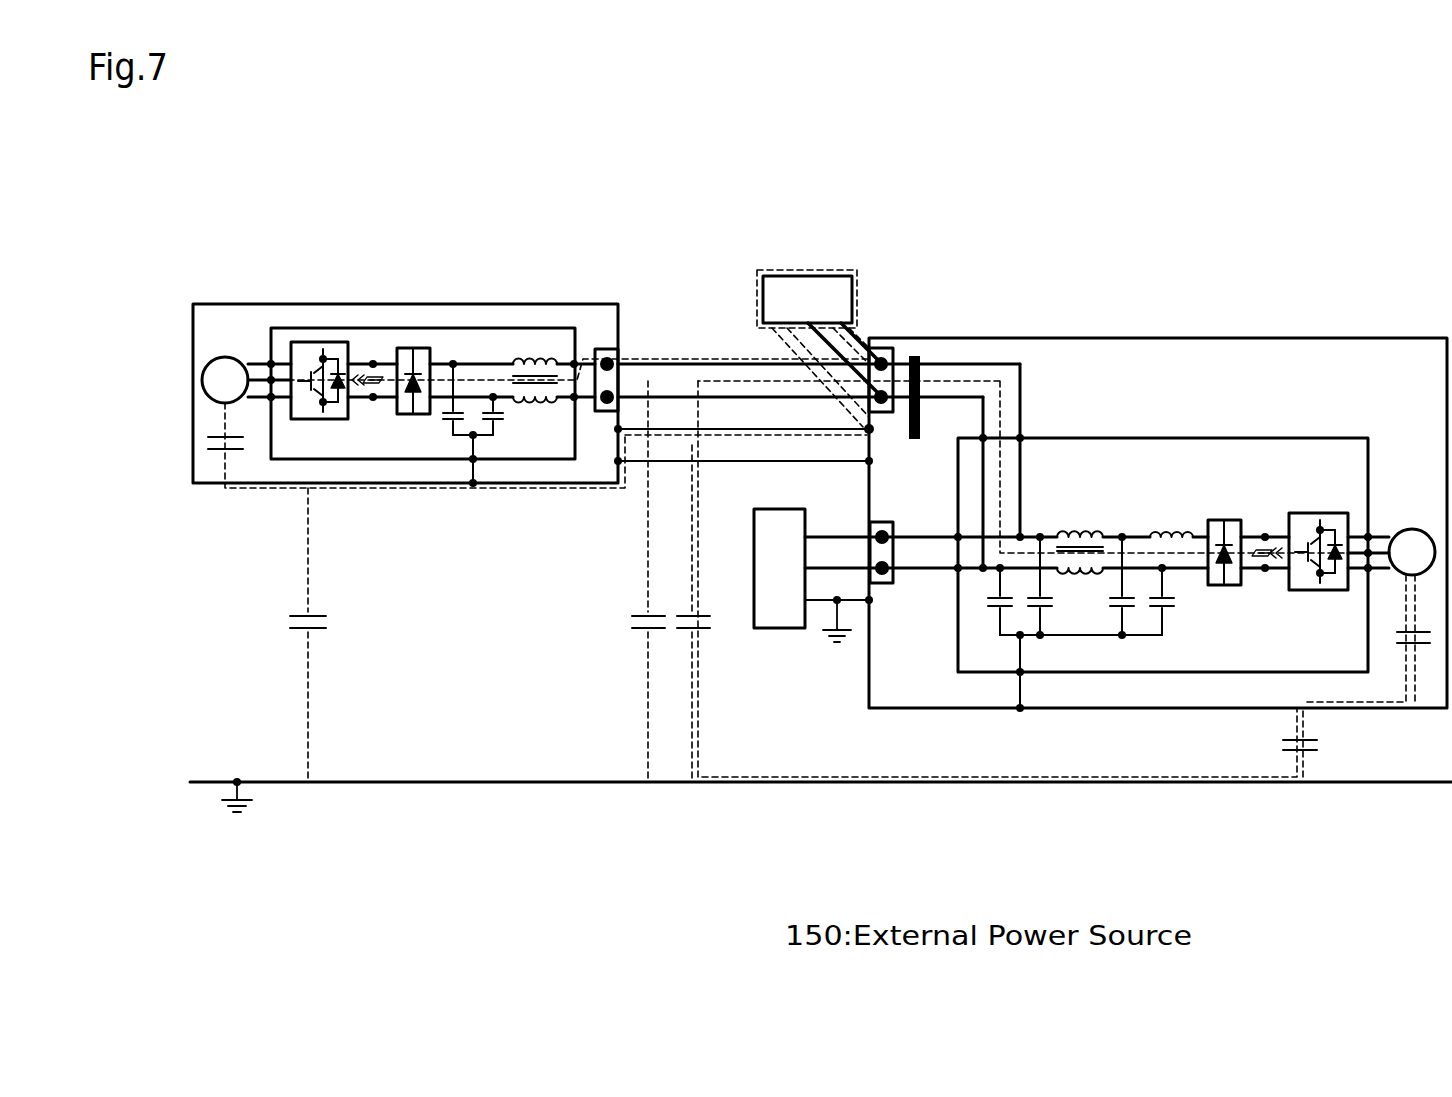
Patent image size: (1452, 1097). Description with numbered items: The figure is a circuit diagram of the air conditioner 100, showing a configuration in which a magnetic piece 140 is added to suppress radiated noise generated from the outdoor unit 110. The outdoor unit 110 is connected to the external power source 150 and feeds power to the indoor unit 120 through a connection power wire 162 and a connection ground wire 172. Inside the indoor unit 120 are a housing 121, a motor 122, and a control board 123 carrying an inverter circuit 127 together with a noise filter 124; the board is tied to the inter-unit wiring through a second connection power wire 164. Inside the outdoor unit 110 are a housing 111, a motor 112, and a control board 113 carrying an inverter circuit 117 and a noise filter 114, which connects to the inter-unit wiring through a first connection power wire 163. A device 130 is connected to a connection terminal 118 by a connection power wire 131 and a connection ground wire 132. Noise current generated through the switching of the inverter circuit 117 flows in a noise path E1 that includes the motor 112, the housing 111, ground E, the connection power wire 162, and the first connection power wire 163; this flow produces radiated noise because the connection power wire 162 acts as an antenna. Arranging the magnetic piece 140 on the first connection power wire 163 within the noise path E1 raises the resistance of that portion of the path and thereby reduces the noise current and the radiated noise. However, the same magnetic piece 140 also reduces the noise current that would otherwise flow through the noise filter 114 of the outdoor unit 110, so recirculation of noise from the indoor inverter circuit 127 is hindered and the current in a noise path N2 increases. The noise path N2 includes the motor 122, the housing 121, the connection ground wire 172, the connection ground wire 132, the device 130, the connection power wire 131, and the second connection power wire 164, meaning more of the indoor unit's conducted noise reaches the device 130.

The air conditioner 100 is at (1158, 417).
The outdoor unit 110 is at (1158, 475).
The housing 111 is at (1296, 338).
The motor 112 is at (1412, 529).
The control board 113 is at (1171, 544).
The noise filter 114 is at (1185, 642).
The inverter circuit 117 is at (1313, 513).
The connection terminal 118 is at (880, 348).
The indoor unit 120 is at (409, 363).
The housing 121 is at (505, 304).
The motor 122 is at (217, 356).
The control board 123 is at (421, 436).
The noise filter 124 is at (430, 433).
The inverter circuit 127 is at (308, 342).
The device 130 is at (805, 276).
The connection power wire 131 is at (866, 357).
The connection ground wire 132 is at (872, 435).
The magnetic piece 140 is at (917, 352).
The external power source 150 is at (779, 628).
The connection power wire 162 is at (660, 358).
The first connection power wire 163 is at (1022, 402).
The second connection power wire 164 is at (585, 349).
The connection ground wire 172 is at (760, 427).
The ground E is at (890, 814).
The noise path E1 is at (1178, 783).
The noise path N2 is at (263, 489).